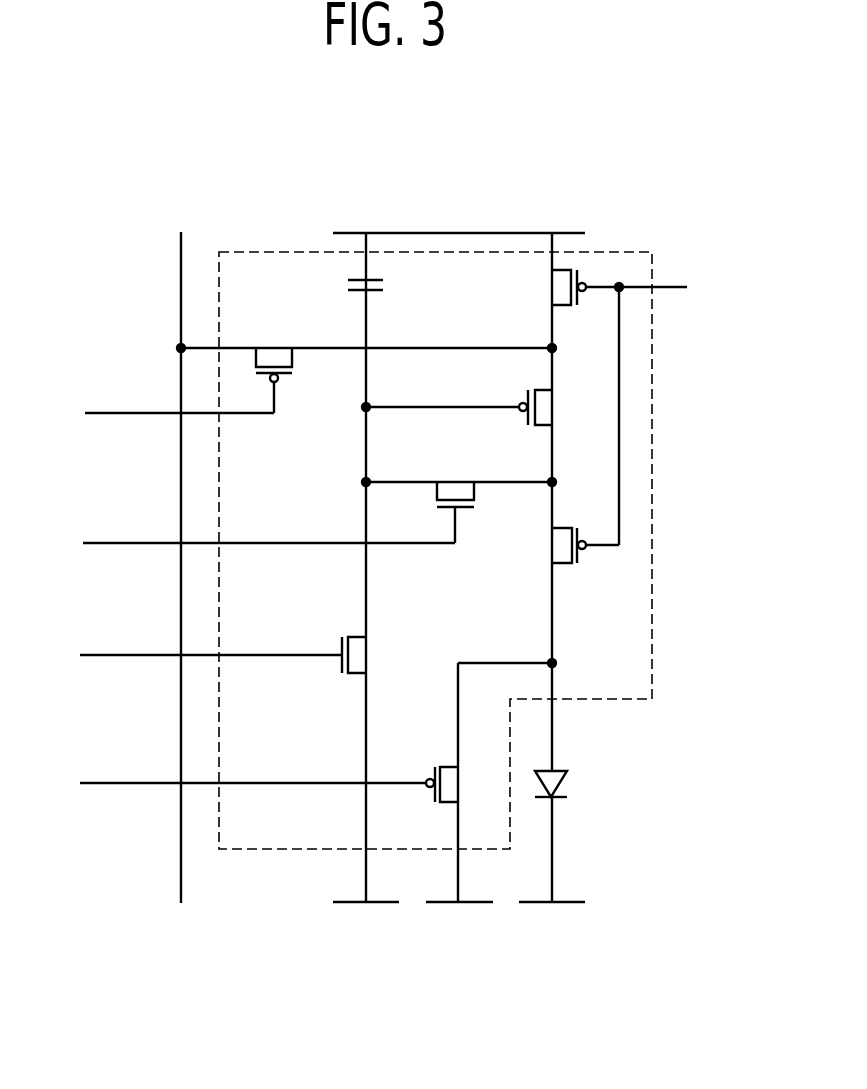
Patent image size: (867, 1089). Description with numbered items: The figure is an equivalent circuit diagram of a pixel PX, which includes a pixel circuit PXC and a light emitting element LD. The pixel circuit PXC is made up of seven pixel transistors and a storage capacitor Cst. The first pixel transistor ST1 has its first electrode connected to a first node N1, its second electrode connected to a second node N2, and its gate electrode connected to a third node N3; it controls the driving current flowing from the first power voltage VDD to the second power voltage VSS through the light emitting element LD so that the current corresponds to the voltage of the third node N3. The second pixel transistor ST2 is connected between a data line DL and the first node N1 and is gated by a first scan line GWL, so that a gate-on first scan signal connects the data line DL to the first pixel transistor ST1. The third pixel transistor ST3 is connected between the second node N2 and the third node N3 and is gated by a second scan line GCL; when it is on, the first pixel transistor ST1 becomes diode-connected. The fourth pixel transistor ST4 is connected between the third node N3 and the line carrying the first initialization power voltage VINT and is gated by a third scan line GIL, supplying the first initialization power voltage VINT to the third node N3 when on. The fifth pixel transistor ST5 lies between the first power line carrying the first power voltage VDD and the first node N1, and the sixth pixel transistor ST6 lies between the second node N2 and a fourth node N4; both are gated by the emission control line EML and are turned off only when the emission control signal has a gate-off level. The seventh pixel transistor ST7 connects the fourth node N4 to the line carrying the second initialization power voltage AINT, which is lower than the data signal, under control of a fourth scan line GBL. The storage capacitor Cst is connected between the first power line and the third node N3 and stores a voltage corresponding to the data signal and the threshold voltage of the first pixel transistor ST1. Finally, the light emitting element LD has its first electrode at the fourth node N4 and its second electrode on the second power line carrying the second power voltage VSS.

The pixel PX is at (617, 167).
The pixel circuit PXC is at (653, 475).
The data line DL is at (180, 551).
The first power voltage VDD is at (459, 217).
The first initialization power voltage VINT is at (366, 587).
The second initialization power voltage AINT is at (459, 802).
The second power voltage VSS is at (552, 587).
The storage capacitor Cst is at (385, 287).
The first node N1 is at (382, 351).
The second node N2 is at (475, 484).
The third node N3 is at (440, 390).
The fourth node N4 is at (523, 667).
The first pixel transistor ST1 is at (553, 408).
The second pixel transistor ST2 is at (274, 365).
The third pixel transistor ST3 is at (455, 497).
The fourth pixel transistor ST4 is at (373, 657).
The fifth pixel transistor ST5 is at (551, 288).
The sixth pixel transistor ST6 is at (568, 547).
The seventh pixel transistor ST7 is at (466, 787).
The first scan line GWL is at (153, 414).
The second scan line GCL is at (243, 544).
The third scan line GIL is at (188, 656).
The fourth scan line GBL is at (229, 785).
The emission control line EML is at (663, 401).
The light emitting element LD is at (568, 789).